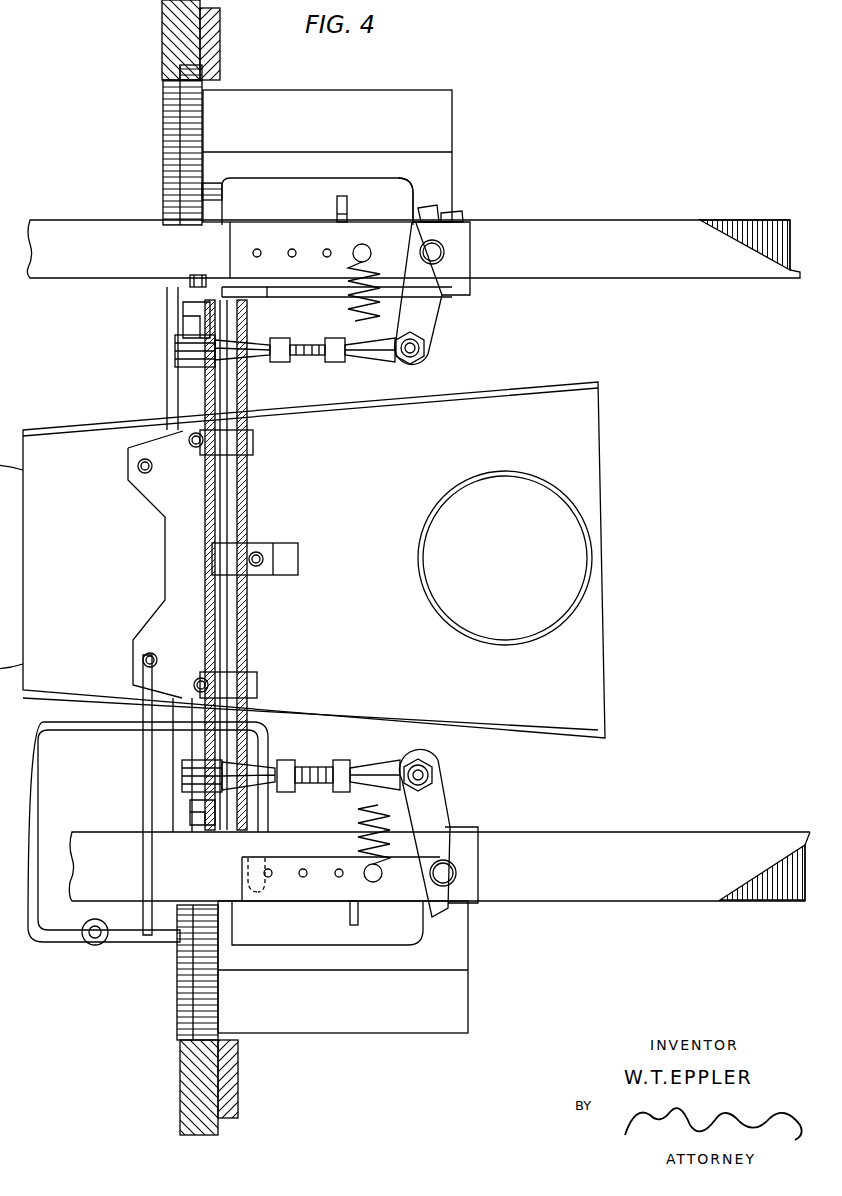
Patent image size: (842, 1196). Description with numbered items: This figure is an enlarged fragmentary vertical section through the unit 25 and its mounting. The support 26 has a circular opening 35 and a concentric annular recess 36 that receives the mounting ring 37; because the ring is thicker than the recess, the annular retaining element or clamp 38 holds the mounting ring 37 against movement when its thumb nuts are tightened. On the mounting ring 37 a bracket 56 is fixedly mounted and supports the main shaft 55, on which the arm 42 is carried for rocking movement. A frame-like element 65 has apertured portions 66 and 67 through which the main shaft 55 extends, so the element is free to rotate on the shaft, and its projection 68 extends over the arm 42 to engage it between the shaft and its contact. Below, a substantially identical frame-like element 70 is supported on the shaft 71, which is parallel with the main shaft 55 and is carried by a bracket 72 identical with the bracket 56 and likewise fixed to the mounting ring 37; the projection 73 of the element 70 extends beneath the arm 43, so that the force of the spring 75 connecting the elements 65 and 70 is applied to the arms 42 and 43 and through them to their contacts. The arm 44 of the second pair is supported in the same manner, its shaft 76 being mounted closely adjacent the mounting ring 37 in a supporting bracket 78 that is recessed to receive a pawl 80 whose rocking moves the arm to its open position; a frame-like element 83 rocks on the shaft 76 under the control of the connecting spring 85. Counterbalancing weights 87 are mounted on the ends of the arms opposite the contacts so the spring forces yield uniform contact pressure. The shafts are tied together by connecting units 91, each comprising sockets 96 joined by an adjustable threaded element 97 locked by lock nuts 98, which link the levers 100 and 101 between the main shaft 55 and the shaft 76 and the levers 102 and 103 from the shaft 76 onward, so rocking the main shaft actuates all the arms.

The unit 25 is at (538, 143).
The support 26 is at (172, 45).
The circular opening 35 is at (172, 190).
The annular recess 36 is at (195, 1045).
The mounting ring 37 is at (192, 155).
The annular retaining element or clamp 38 is at (232, 1095).
The arm 42 is at (597, 278).
The arm 43 is at (648, 890).
The arm 44 is at (592, 500).
The main shaft 55 is at (440, 250).
The bracket 56 is at (402, 100).
The frame-like element 65 is at (278, 224).
The apertured portion 66 is at (447, 281).
The apertured portion 67 is at (398, 224).
The projection 68 is at (337, 205).
The frame-like element 70 is at (290, 905).
The shaft 71 is at (445, 875).
The bracket 72 is at (403, 1025).
The projection 73 is at (355, 918).
The spring 75 is at (352, 305).
The shaft 76 is at (232, 515).
The supporting bracket 78 is at (248, 635).
The pawl 80 is at (298, 565).
The frame-like element 83 is at (57, 948).
The connecting spring 85 is at (106, 950).
The weight 87 is at (748, 220).
The connecting unit 91 is at (442, 358).
The socket 96 is at (255, 362).
The threaded element 97 is at (310, 358).
The lock nut 98 is at (281, 364).
The lever 100 is at (432, 315).
The lever 101 is at (183, 310).
The lever 102 is at (190, 820).
The lever 103 is at (440, 822).